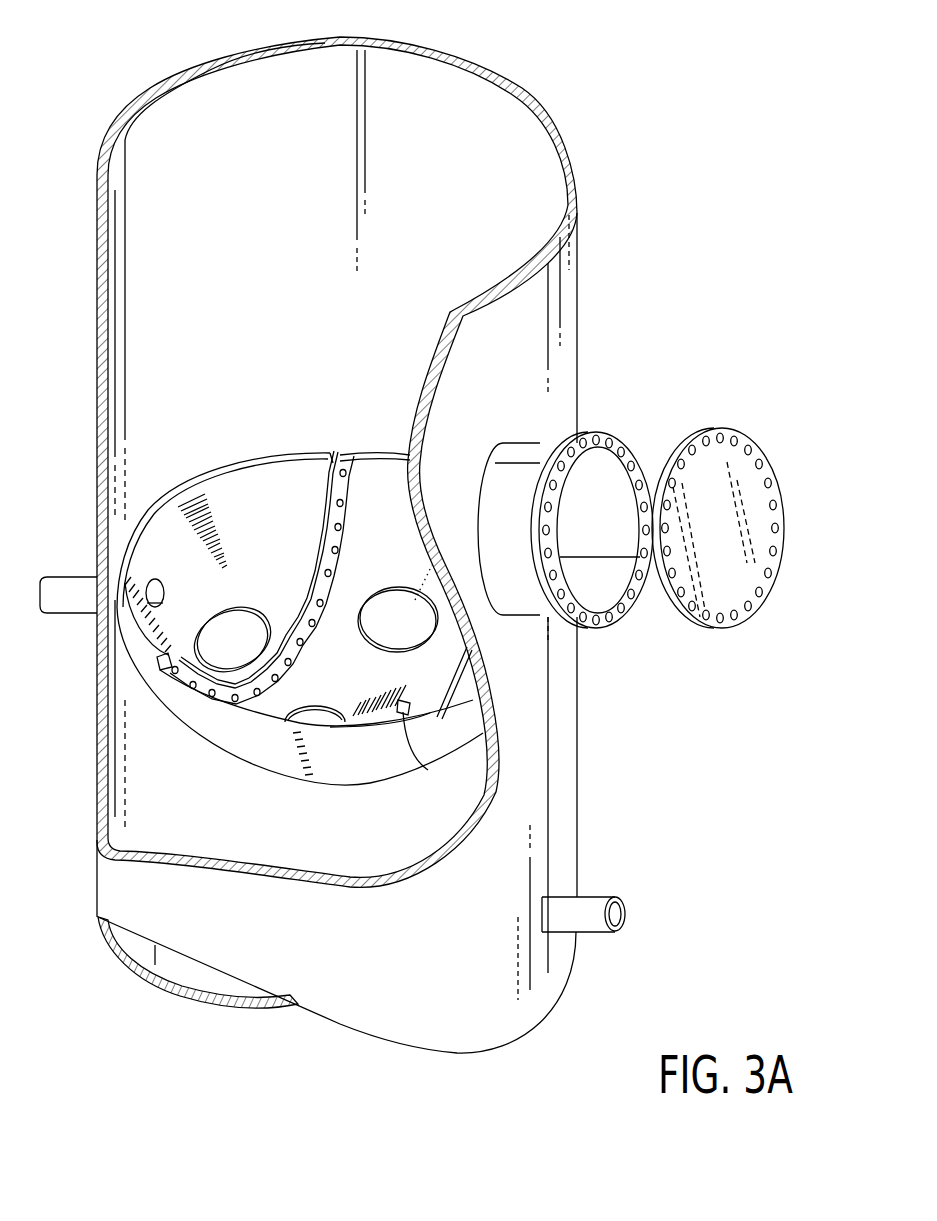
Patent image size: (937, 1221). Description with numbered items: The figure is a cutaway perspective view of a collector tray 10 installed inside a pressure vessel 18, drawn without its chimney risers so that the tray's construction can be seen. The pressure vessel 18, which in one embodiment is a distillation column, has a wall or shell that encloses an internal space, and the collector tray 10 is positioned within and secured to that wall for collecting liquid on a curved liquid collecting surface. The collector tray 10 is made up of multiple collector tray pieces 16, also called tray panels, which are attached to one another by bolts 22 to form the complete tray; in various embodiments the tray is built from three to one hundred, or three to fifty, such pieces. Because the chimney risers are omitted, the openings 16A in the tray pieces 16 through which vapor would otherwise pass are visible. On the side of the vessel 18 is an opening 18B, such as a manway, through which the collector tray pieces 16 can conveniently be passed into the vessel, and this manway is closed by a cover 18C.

The pressure vessel 18 is at (70, 92).
The collector tray 10 is at (244, 447).
The bolts 22 is at (350, 450).
The collector tray pieces 16 is at (290, 548).
The openings 16A is at (240, 640).
The opening 18B is at (588, 457).
The cover 18C is at (770, 465).